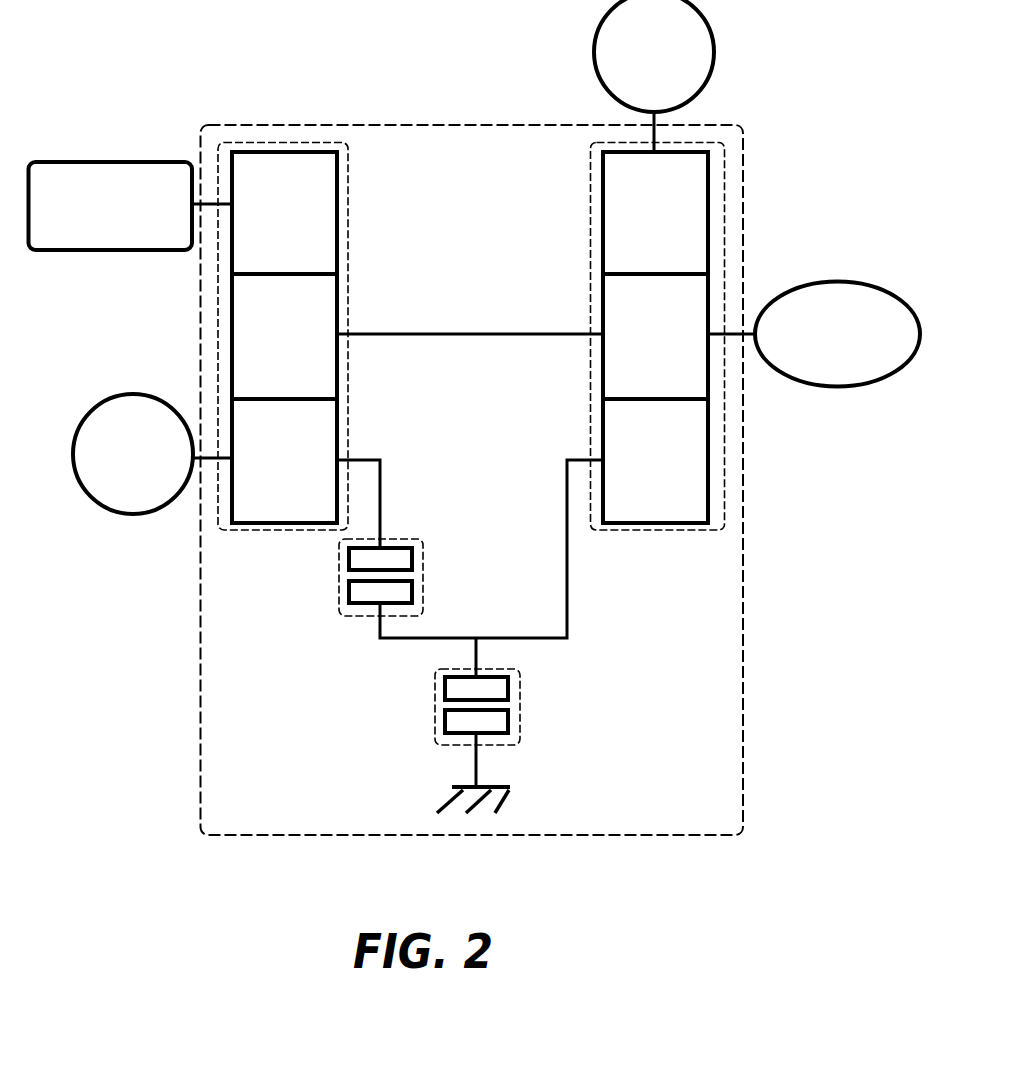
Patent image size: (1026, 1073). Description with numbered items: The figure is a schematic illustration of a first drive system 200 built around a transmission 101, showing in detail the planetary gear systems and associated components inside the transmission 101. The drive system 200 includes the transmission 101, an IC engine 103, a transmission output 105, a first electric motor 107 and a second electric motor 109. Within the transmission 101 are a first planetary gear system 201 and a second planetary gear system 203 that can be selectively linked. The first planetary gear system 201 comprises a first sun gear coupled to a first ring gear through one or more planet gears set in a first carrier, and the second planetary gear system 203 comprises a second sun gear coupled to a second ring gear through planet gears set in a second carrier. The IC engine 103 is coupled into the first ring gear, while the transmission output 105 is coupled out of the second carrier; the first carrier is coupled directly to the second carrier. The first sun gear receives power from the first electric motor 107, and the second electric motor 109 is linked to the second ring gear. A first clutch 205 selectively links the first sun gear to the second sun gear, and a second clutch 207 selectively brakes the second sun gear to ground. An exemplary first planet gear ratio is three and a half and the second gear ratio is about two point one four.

The first drive system 200 is at (173, 68).
The transmission 101 is at (492, 164).
The IC engine 103 is at (135, 236).
The transmission output 105 is at (814, 334).
The first electric motor 107 is at (160, 487).
The second electric motor 109 is at (680, 86).
The first planetary gear system 201 is at (349, 272).
The second planetary gear system 203 is at (592, 263).
The first clutch 205 is at (418, 540).
The second clutch 207 is at (518, 700).